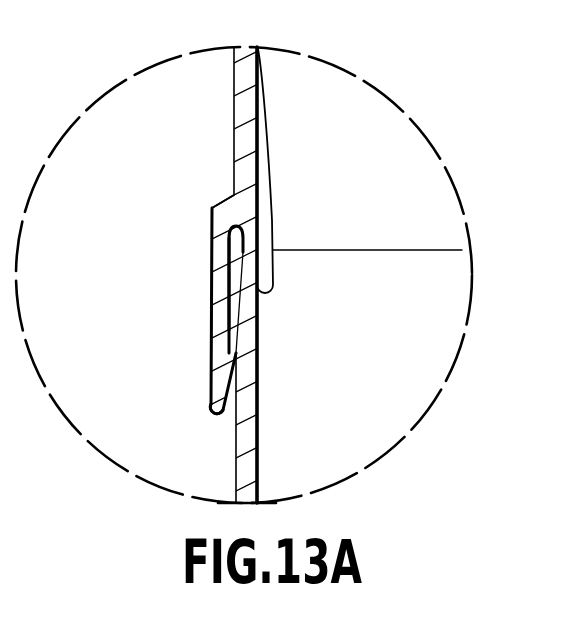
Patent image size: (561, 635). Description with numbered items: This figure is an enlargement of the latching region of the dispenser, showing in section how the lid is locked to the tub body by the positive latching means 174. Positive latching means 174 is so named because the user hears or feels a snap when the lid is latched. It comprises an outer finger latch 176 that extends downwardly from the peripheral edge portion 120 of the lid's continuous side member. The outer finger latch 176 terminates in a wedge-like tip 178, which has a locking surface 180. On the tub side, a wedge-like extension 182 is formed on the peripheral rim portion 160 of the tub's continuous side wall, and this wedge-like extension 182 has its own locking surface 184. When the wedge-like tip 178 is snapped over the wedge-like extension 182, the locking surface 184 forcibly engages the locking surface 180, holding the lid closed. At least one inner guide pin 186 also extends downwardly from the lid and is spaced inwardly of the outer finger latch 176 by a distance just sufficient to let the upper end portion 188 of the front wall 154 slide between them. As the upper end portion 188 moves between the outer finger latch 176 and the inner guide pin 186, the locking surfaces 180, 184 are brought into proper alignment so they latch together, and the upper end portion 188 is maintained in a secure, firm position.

The peripheral edge portion 120 is at (208, 170).
The front wall 154 is at (260, 435).
The peripheral rim portion 160 is at (314, 301).
The positive latching means 174 is at (160, 268).
The outer finger latch 176 is at (208, 392).
The wedge-like tip 178 is at (207, 422).
The locking surface 180 is at (235, 345).
The wedge-like extension 182 is at (222, 322).
The locking surface 184 is at (231, 350).
The inner guide pin 186 is at (273, 205).
The upper end portion 188 is at (232, 222).